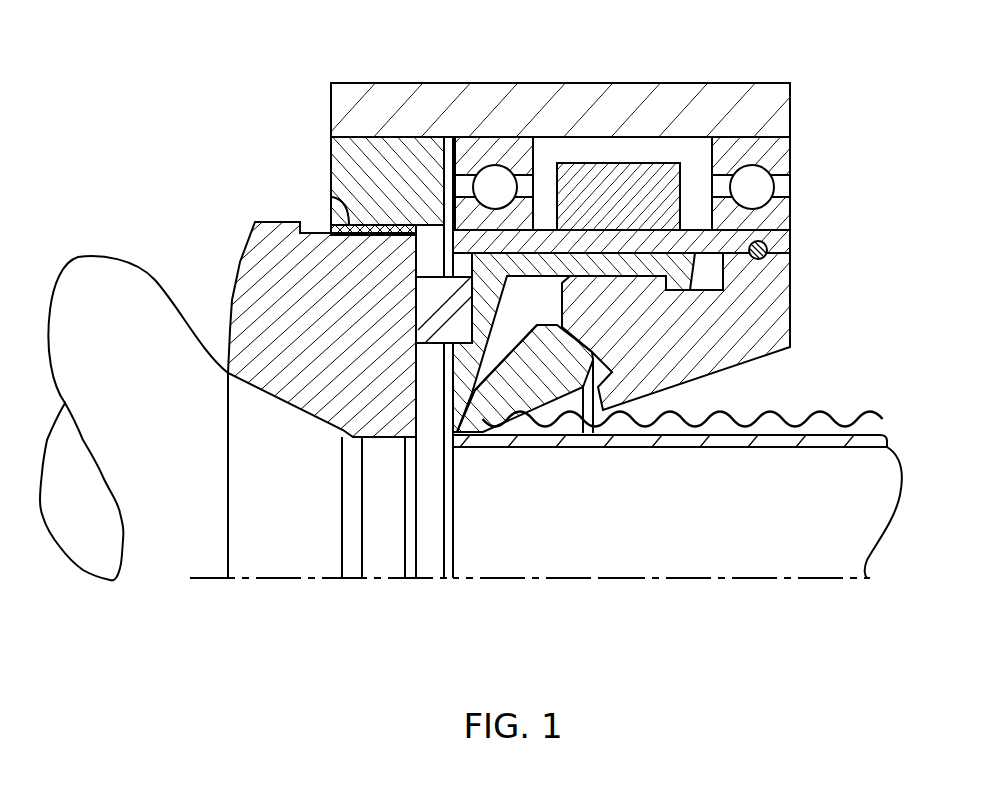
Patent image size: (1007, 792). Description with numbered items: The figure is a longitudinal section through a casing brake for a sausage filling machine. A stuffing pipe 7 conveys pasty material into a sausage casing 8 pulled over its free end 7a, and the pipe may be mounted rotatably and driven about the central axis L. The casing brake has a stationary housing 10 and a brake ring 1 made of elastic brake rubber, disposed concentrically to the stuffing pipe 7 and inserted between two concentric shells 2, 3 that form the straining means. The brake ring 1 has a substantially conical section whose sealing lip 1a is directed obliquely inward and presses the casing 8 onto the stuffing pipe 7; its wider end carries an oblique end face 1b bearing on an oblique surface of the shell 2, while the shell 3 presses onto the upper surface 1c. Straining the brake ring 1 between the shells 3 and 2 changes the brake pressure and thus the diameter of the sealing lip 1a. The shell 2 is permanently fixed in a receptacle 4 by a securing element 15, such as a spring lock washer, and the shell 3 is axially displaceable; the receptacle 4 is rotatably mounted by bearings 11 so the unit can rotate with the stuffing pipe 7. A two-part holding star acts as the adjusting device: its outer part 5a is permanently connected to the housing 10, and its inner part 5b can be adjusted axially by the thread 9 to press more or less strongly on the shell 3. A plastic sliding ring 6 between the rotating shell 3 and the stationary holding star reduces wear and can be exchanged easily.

The brake ring 1 is at (525, 385).
The sealing lip 1a is at (472, 432).
The oblique end face 1b is at (652, 326).
The upper surface 1c is at (515, 343).
The shell 2 is at (671, 339).
The shell 3 is at (478, 288).
The receptacle 4 is at (611, 214).
The outer part of the holding star 5a is at (375, 196).
The inner part of the holding star 5b is at (317, 332).
The sliding ring 6 is at (433, 345).
The stuffing pipe 7 is at (860, 532).
The free end of the stuffing pipe 7a is at (492, 556).
The sausage casing 8 is at (857, 412).
The thread 9 is at (327, 196).
The housing 10 is at (621, 100).
The bearings 11 is at (489, 152).
The securing element 15 is at (768, 255).
The central axis L is at (539, 579).